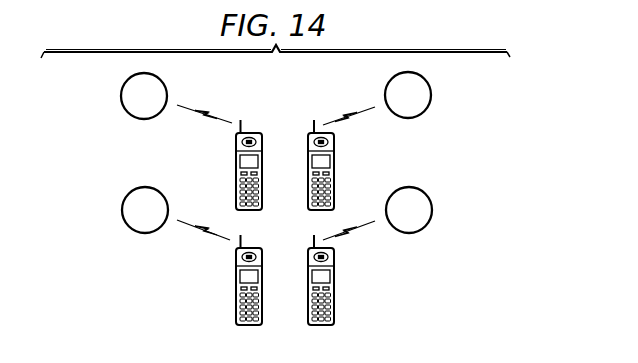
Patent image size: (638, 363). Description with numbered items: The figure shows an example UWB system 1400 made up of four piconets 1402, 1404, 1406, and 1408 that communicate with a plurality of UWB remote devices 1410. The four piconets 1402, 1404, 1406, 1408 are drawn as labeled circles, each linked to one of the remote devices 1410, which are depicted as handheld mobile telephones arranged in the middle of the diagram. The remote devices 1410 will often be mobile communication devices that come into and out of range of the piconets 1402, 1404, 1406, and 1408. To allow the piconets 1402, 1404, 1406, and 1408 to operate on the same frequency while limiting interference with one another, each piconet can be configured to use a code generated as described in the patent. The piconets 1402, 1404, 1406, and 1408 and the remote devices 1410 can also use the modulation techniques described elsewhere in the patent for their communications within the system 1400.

The UWB system 1400 is at (449, 279).
The piconet 1402 is at (121, 97).
The piconet 1404 is at (431, 95).
The piconet 1406 is at (122, 212).
The piconet 1408 is at (432, 212).
The UWB remote device 1410 is at (235, 160).